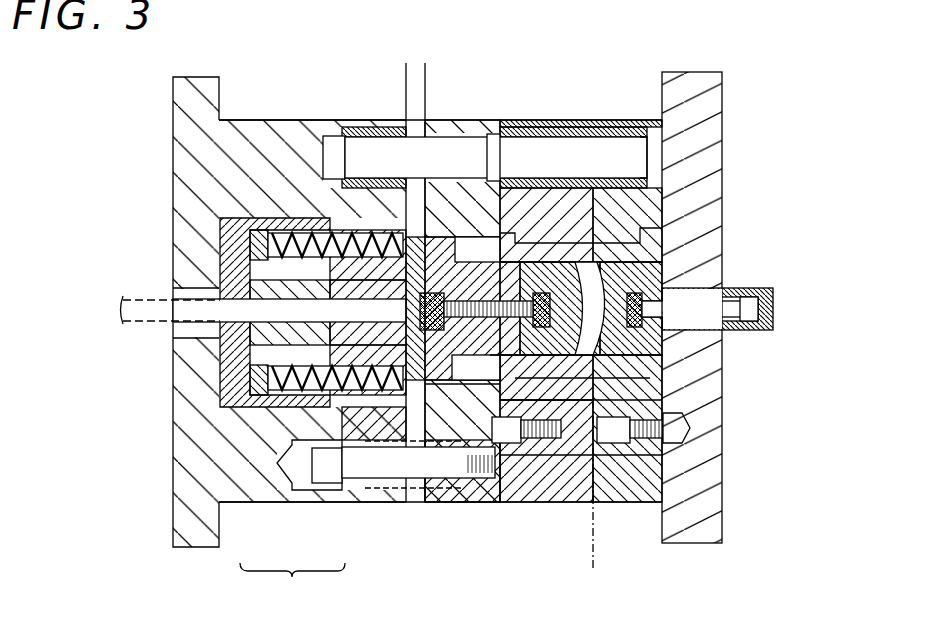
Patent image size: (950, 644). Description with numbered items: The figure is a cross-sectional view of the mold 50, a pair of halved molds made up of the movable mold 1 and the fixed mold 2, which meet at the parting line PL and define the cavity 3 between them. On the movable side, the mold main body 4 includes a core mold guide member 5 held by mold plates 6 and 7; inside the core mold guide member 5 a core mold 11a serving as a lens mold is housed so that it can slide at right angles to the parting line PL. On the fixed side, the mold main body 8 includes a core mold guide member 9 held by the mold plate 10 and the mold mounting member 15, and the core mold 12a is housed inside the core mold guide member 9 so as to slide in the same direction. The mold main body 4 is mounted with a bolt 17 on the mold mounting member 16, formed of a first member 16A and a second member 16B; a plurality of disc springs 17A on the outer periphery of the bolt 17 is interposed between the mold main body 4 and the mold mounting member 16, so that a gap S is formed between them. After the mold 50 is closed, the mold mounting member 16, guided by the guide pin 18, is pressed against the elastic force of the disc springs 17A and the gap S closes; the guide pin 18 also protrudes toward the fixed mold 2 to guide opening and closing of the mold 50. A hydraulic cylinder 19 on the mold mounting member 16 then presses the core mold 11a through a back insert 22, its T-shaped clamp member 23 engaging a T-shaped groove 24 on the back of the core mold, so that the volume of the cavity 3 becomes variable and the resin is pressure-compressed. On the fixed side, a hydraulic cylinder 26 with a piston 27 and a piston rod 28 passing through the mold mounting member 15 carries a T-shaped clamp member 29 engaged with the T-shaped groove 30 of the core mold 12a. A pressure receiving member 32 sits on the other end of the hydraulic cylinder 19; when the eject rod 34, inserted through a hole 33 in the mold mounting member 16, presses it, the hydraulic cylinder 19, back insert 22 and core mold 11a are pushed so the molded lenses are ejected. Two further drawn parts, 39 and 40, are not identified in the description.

The movable mold 1 is at (458, 574).
The fixed mold 2 is at (657, 566).
The cavity 3 is at (662, 352).
The mold main body 4 is at (522, 483).
The core mold guide member 5 is at (565, 255).
The mold plate 6 is at (572, 483).
The mold plate 7 is at (485, 485).
The mold main body 8 is at (635, 473).
The core mold guide member 9 is at (627, 253).
The mold plate 10 is at (613, 472).
The core mold 11a is at (538, 257).
The core mold 12a is at (615, 250).
The mold mounting member 15 is at (698, 497).
The mold mounting member 16 is at (292, 579).
The first member 16A is at (262, 485).
The second member 16B is at (348, 498).
The bolt 17 is at (353, 472).
The disc spring 17A is at (382, 485).
The guide pin 18 is at (466, 160).
The hydraulic cylinder 19 is at (238, 338).
The back insert 22 is at (483, 340).
The T-shaped clamp member 23 is at (568, 345).
The T-shaped groove 24 is at (660, 248).
The hydraulic cylinder 26 is at (773, 309).
The piston 27 is at (773, 297).
The piston rod 28 is at (747, 292).
The T-shaped clamp member 29 is at (662, 345).
The T-shaped groove 30 is at (656, 270).
The pressure receiving member 32 is at (220, 252).
The hole 33 is at (200, 341).
The eject rod 34 is at (160, 300).
The spring retainer 39 is at (284, 215).
The coil spring 40 is at (316, 240).
The mold 50 is at (172, 563).
The gap S is at (390, 72).
The parting line PL is at (598, 496).